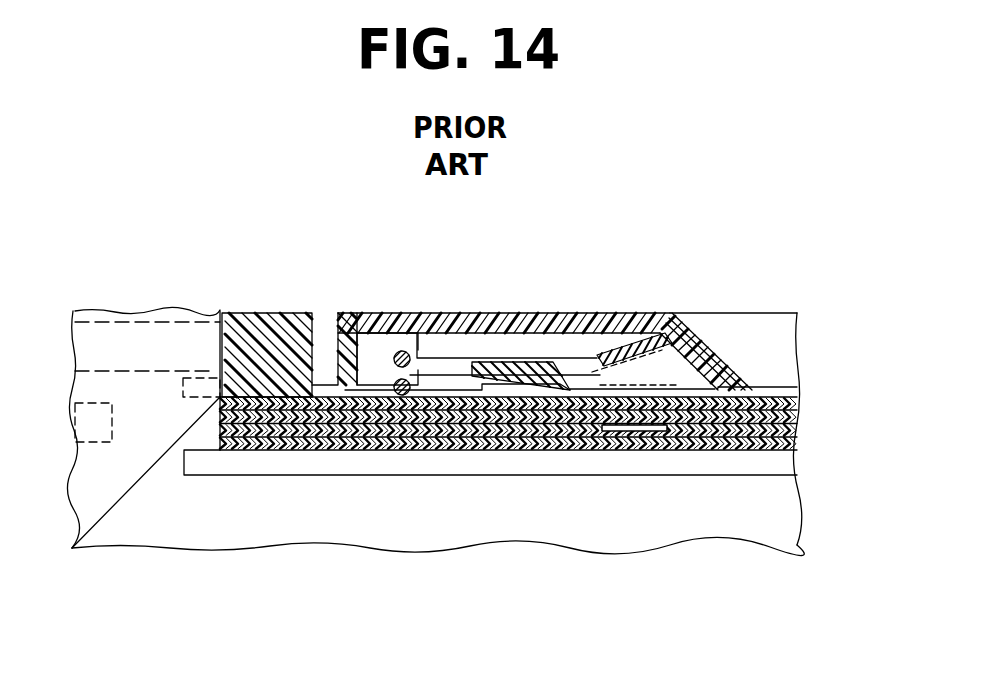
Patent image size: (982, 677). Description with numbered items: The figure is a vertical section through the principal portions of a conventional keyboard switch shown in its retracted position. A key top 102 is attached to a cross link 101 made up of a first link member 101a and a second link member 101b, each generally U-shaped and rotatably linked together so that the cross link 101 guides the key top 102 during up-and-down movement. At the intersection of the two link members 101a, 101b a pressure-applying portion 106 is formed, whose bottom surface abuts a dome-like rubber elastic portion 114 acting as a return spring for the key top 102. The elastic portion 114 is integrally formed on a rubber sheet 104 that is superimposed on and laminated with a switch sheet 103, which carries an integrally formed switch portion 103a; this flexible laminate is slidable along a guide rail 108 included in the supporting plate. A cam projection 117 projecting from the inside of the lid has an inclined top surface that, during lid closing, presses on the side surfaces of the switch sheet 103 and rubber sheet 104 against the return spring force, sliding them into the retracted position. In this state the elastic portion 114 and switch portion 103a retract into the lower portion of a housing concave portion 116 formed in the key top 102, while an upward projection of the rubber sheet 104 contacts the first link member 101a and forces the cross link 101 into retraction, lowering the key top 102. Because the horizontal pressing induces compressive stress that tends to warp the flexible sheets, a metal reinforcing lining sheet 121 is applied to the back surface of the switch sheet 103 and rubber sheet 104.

The cross link 101 is at (461, 352).
The first link member 101a is at (430, 362).
The second link member 101b is at (468, 383).
The key top 102 is at (690, 345).
The switch sheet 103 is at (797, 440).
The switch portion 103a is at (606, 352).
The rubber sheet 104 is at (798, 392).
The pressure-applying portion 106 is at (557, 370).
The guide rail 108 is at (722, 462).
The elastic portion 114 is at (705, 365).
The housing concave portion 116 is at (635, 352).
The cam projection 117 is at (150, 343).
The lining sheet 121 is at (763, 445).